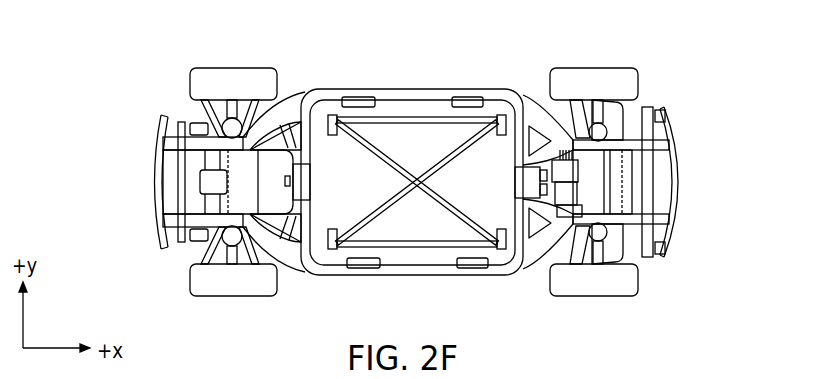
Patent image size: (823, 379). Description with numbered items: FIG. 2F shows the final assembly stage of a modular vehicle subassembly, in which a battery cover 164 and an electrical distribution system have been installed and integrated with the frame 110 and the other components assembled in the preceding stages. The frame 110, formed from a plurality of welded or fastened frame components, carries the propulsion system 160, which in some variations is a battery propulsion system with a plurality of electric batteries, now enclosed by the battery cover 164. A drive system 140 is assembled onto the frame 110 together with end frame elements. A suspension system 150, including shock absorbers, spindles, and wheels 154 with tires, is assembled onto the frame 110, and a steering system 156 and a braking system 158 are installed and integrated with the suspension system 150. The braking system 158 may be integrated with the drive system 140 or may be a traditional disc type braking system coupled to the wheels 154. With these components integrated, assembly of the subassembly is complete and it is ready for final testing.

The frame 110 is at (493, 85).
The drive system 140 is at (582, 165).
The suspension system 150 is at (618, 243).
The wheels 154 is at (232, 67).
The steering system 156 is at (577, 197).
The braking system 158 is at (581, 212).
The propulsion system 160 is at (419, 105).
The battery cover 164 is at (390, 138).